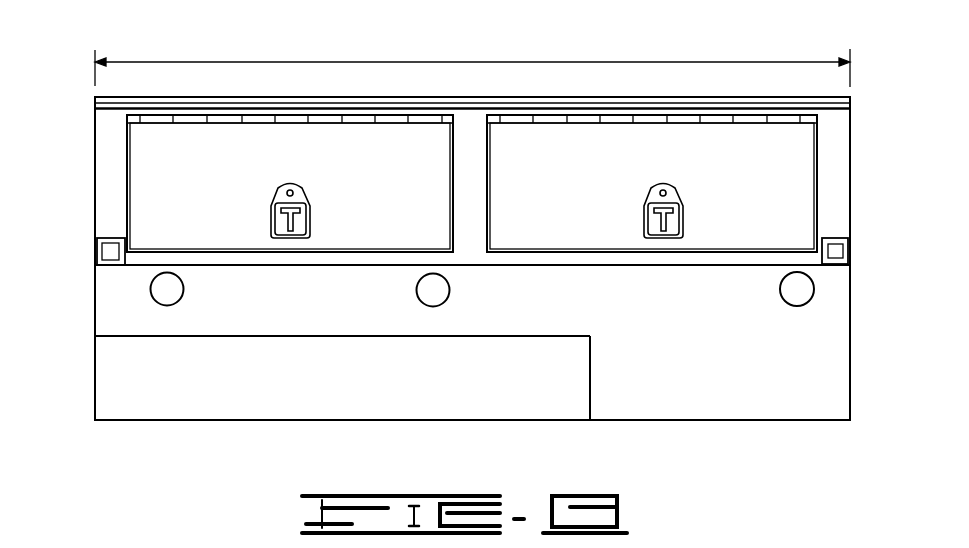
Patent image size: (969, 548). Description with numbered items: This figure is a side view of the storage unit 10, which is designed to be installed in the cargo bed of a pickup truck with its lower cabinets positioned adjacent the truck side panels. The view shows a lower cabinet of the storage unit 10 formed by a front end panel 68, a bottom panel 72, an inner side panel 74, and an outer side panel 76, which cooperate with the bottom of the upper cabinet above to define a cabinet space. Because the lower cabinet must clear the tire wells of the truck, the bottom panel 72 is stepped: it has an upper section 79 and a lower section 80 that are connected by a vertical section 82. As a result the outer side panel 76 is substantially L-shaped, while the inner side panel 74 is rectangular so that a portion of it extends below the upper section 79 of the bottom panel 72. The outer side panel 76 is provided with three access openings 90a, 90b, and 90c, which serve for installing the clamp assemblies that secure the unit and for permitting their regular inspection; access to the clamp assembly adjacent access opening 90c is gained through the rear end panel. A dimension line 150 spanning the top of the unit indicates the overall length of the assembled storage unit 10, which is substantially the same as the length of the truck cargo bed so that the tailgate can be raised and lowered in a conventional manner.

The storage unit 10 is at (145, 421).
The front end panel 68 is at (95, 310).
The bottom panel 72 is at (642, 421).
The inner side panel 74 is at (335, 409).
The outer side panel 76 is at (706, 407).
The upper section 79 is at (231, 338).
The lower section 80 is at (808, 421).
The vertical section 82 is at (588, 386).
The access opening 90a is at (158, 288).
The access opening 90b is at (444, 290).
The access opening 90c is at (808, 289).
The overall length dimension 150 is at (420, 62).